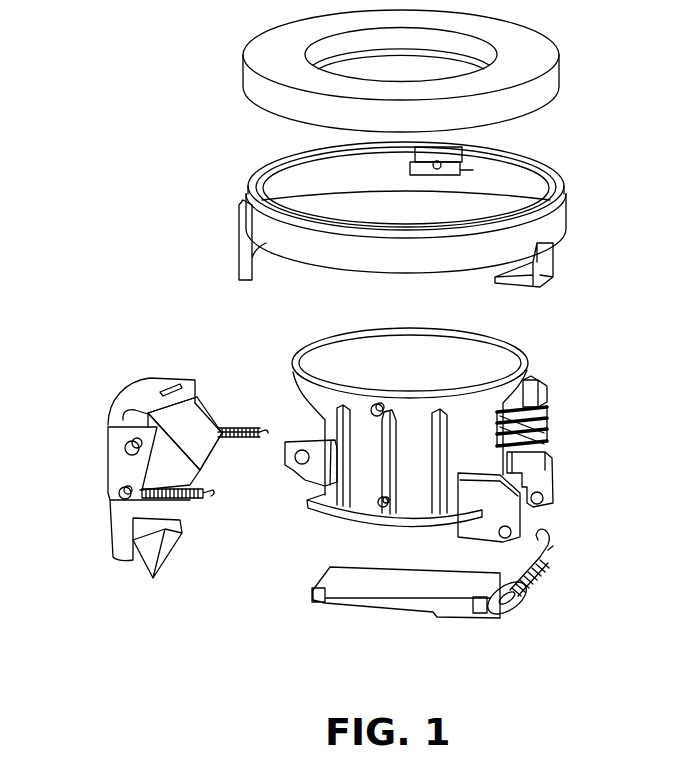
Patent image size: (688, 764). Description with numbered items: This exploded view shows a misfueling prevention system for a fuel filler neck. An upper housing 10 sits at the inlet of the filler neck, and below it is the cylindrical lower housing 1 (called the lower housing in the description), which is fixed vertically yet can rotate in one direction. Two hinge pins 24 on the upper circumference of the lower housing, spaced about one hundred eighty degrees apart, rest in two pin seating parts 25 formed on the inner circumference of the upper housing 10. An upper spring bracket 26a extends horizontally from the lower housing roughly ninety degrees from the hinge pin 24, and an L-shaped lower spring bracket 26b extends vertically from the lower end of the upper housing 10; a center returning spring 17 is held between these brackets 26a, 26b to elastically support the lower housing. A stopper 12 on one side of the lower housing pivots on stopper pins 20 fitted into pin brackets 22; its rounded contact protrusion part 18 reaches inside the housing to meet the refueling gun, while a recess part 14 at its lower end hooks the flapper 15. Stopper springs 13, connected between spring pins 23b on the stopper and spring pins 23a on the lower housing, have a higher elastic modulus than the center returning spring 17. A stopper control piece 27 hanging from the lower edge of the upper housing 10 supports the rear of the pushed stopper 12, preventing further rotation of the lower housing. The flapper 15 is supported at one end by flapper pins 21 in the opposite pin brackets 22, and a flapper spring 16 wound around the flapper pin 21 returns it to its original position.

The body 1 is at (480, 353).
The upper housing 10 is at (533, 98).
The stopper 12 is at (120, 465).
The stopper spring 13 is at (190, 507).
The recess part 14 is at (153, 535).
The flapper 15 is at (395, 585).
The flapper spring 16 is at (542, 578).
The center returning spring 17 is at (530, 430).
The contact protrusion part 18 is at (193, 437).
The stopper pin 20 is at (127, 443).
The flapper pin 21 is at (493, 600).
The pin bracket 22 is at (317, 448).
The spring pin 23a is at (118, 497).
The spring pin 23b is at (382, 506).
The hinge pin 24 is at (372, 407).
The pin seating part 25 is at (413, 150).
The upper spring bracket 26a is at (533, 380).
The lower spring bracket 26b is at (523, 267).
The stopper control piece 27 is at (248, 255).